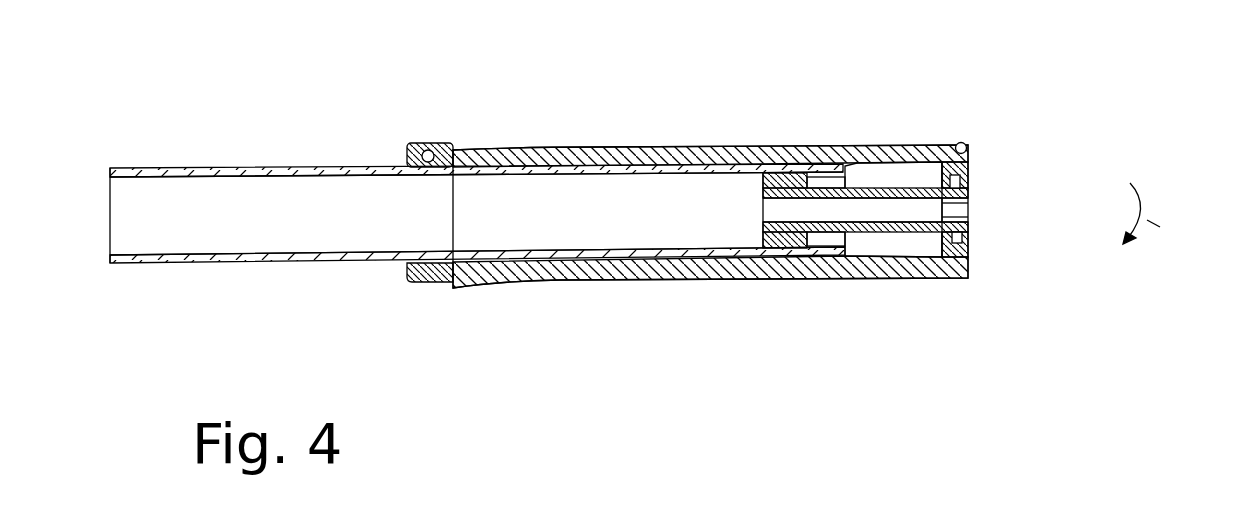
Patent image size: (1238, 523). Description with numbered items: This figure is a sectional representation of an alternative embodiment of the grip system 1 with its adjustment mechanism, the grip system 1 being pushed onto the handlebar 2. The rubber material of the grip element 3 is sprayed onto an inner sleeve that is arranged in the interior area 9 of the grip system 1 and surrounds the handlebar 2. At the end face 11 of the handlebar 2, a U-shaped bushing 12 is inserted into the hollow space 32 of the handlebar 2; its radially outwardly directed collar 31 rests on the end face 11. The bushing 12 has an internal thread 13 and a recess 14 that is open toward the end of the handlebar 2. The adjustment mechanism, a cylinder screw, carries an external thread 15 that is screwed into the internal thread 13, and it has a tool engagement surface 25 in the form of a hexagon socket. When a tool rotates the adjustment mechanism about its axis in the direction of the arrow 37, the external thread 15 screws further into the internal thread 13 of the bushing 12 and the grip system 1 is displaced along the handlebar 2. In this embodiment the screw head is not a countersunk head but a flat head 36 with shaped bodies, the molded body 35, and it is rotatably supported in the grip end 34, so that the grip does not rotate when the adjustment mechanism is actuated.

The grip system 1 is at (740, 123).
The handlebar 2 is at (322, 258).
The grip element 3 is at (617, 152).
The interior area 9 is at (921, 162).
The end face 11 is at (852, 252).
The bushing 12 is at (788, 240).
The internal thread 13 is at (778, 230).
The recess 14 is at (823, 247).
The external thread 15 is at (877, 187).
The tool engagement surface 25 is at (1137, 207).
The collar 31 is at (870, 175).
The hollow space 32 is at (657, 213).
The grip end 34 is at (965, 150).
The molded body 35 is at (967, 237).
The flat head 36 is at (968, 190).
The direction of the arrow 37 is at (1164, 216).